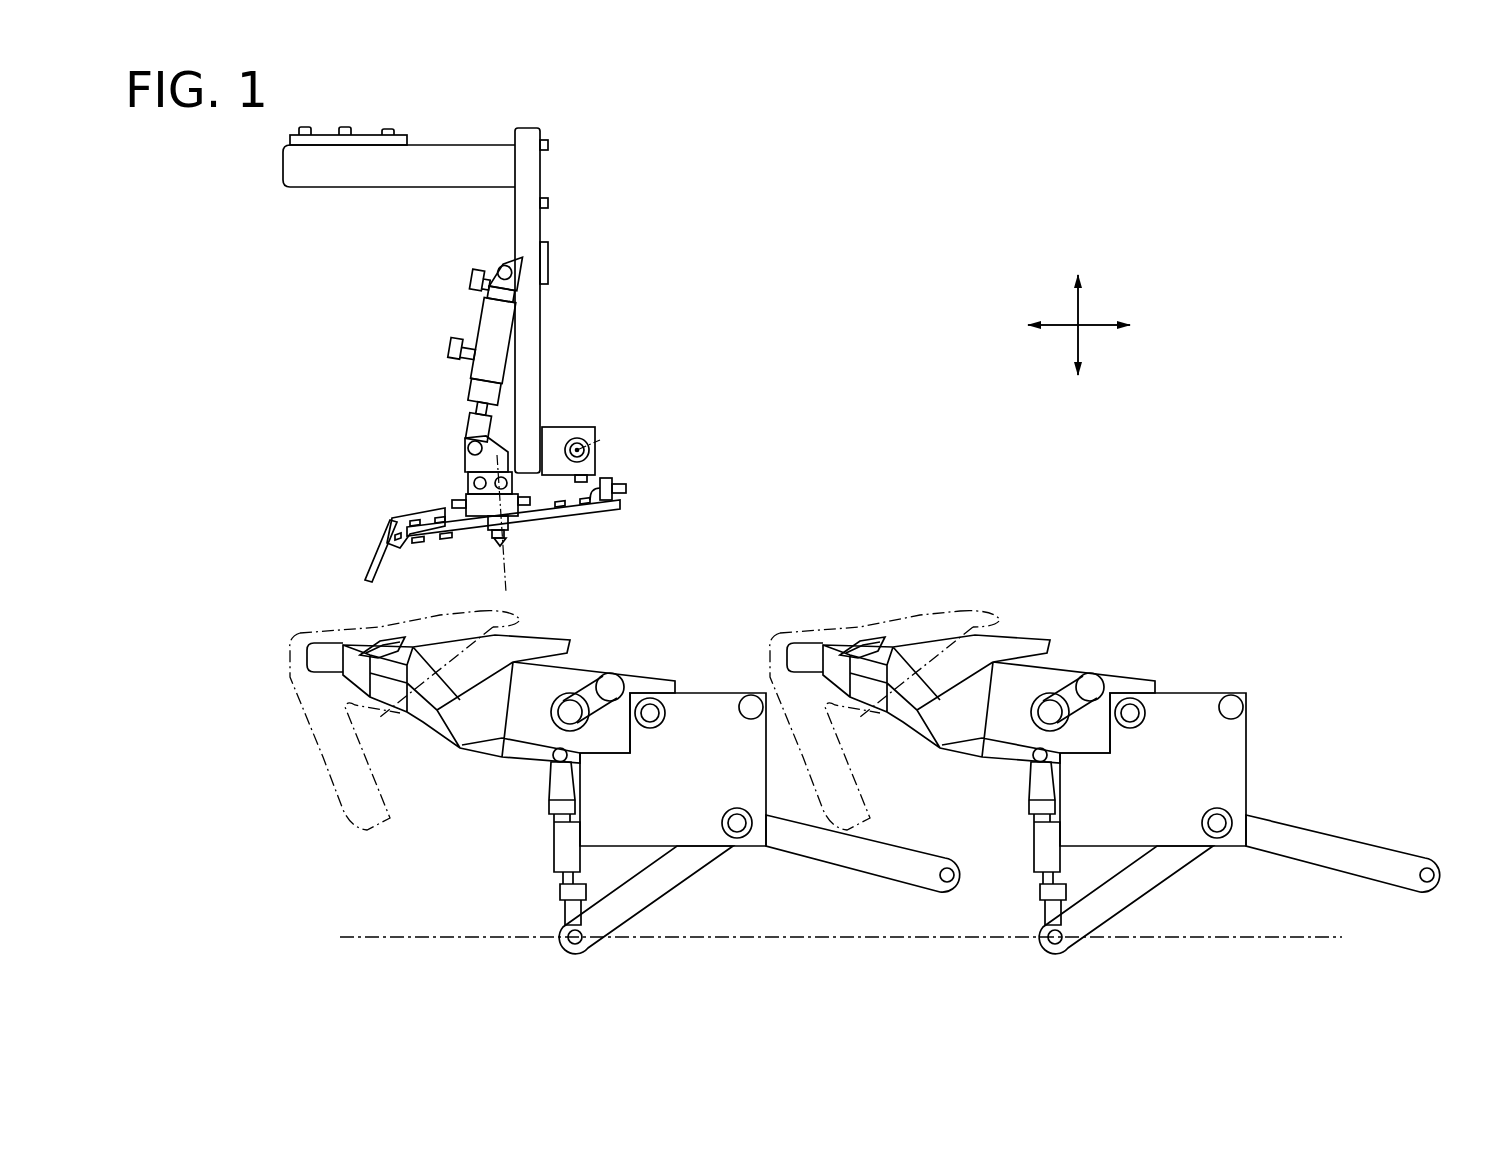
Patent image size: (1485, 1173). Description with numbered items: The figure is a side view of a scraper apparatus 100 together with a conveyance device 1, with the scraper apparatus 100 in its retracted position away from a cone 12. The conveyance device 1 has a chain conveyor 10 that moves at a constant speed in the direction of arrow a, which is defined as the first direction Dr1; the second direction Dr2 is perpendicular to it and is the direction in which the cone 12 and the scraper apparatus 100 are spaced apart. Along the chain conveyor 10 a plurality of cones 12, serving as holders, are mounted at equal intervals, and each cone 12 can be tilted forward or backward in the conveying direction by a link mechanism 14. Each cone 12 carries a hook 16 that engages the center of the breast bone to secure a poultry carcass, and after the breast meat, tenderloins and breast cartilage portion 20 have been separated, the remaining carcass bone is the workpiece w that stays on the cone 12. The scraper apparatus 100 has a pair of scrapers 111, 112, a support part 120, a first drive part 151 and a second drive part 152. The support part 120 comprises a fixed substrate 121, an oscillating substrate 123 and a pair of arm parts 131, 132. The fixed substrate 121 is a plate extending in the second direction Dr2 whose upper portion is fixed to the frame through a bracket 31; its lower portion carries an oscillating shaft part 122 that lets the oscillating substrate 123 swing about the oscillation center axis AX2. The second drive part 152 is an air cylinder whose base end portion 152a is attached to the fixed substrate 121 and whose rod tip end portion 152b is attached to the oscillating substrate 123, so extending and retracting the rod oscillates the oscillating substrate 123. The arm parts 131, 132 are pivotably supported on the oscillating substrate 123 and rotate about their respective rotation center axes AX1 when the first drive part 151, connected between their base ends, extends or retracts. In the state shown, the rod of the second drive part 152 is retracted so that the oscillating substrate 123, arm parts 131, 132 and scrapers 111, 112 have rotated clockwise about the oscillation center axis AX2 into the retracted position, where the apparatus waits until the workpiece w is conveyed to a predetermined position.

The conveyance device 1 is at (1315, 662).
The chain conveyor 10 is at (1340, 738).
The cone 12 is at (440, 748).
The link mechanism 14 is at (658, 903).
The hook 16 is at (382, 641).
The breast cartilage portion 20 is at (497, 616).
The workpiece w is at (276, 638).
The arrow a is at (472, 918).
The bracket 31 is at (447, 138).
The scraper apparatus 100 is at (718, 178).
The support part 120 is at (572, 260).
The fixed substrate 121 is at (530, 228).
The oscillating shaft part 122 is at (556, 427).
The oscillating substrate 123 is at (445, 460).
The second drive part 152 is at (437, 332).
The base end portion 152a is at (490, 265).
The tip end portion 152b is at (470, 440).
The first drive part 151 is at (628, 486).
The scraper 111 is at (336, 531).
The scraper 112 is at (355, 540).
The arm part 131 is at (596, 528).
The arm part 132 is at (642, 512).
The rotation center axis AX1 is at (508, 573).
The oscillation center axis AX2 is at (600, 440).
The first direction Dr1 is at (1090, 322).
The second direction Dr2 is at (1080, 338).